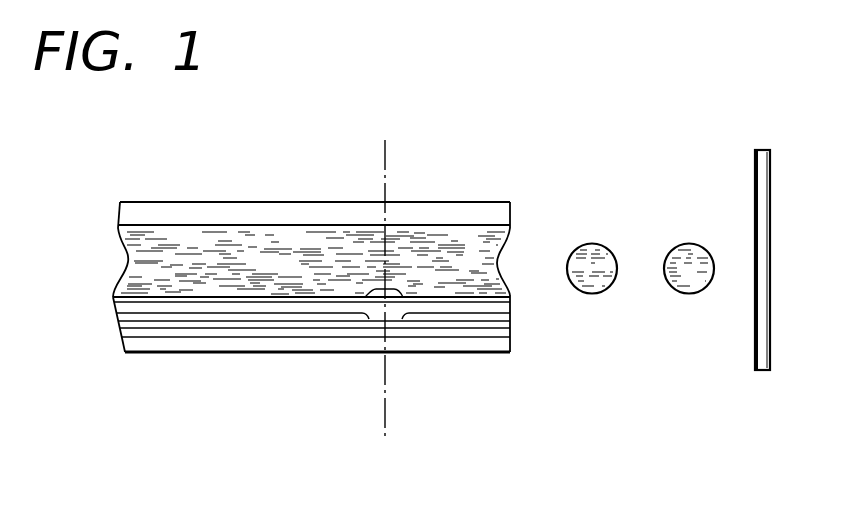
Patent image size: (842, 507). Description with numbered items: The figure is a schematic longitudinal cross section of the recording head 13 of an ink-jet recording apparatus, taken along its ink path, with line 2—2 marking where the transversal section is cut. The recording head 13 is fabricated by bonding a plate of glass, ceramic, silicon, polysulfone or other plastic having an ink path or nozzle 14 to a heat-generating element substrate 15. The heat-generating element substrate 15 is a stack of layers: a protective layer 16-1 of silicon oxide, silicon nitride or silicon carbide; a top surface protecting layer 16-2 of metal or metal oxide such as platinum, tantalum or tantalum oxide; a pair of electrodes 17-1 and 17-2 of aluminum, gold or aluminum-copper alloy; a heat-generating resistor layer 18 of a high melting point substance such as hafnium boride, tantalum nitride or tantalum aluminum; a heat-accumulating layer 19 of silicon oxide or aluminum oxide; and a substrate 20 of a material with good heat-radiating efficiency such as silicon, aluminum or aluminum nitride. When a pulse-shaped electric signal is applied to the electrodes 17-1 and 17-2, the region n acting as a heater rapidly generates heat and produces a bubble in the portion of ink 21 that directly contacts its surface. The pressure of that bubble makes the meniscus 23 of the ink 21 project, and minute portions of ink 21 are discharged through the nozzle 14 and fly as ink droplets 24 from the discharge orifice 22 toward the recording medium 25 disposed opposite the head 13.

The line 2— 2 is at (383, 294).
The recording head 13 is at (200, 202).
The ink path (nozzle) 14 is at (252, 226).
The heat-generating element substrate 15 is at (107, 293).
The protective layer 16-1 is at (163, 305).
The top surface protecting layer 16-2 is at (137, 300).
The electrode 17-1 is at (201, 318).
The electrode 17-2 is at (471, 318).
The heat-generating resistor layer 18 is at (245, 323).
The heat-accumulating layer 19 is at (295, 333).
The substrate 20 is at (358, 346).
The ink 21 is at (157, 240).
The discharge orifice 22 is at (518, 290).
The meniscus 23 is at (500, 252).
The ink droplets 24 is at (713, 237).
The recording medium 25 is at (755, 187).
The region (heater) n is at (383, 290).